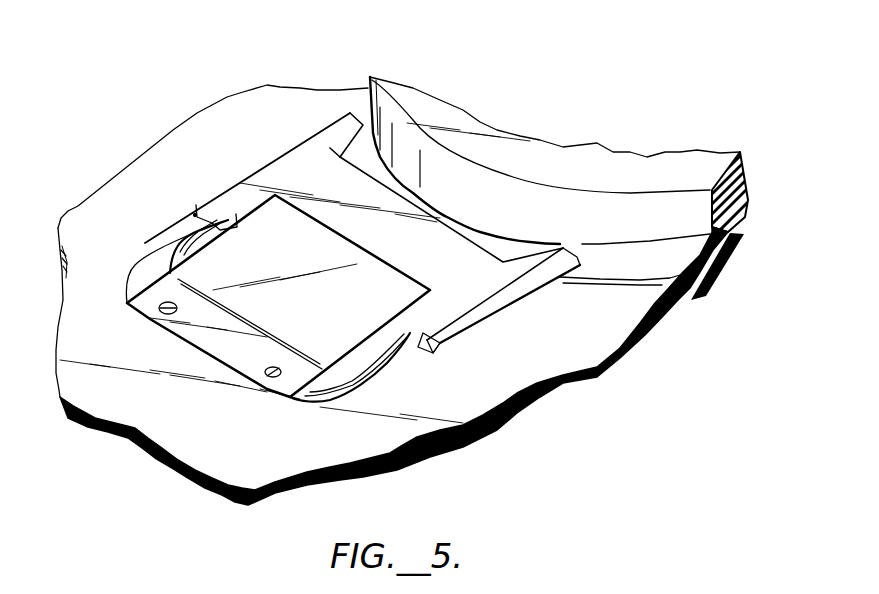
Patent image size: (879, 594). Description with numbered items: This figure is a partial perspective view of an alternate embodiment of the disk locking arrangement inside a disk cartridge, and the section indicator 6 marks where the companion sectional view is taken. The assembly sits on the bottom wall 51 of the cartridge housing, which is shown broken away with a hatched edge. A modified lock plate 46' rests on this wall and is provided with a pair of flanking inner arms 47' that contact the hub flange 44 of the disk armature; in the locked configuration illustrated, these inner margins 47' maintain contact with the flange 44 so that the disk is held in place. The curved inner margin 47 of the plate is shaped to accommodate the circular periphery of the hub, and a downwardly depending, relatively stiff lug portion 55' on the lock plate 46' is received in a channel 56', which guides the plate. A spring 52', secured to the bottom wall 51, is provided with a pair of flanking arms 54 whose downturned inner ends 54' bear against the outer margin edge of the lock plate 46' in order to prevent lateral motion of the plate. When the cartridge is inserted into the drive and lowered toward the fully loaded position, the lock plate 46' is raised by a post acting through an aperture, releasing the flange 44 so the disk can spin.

The peripheral circular flange 44 is at (672, 256).
The modified lock plate 46' is at (340, 141).
The circular segmental inner margin 47 is at (540, 142).
The flanking inner arms 47' is at (545, 181).
The bottom wall 51 is at (497, 418).
The spring 52' is at (302, 407).
The flanking arms 54 is at (269, 303).
The downturned inner ends 54' is at (324, 275).
The lug portion 55' is at (362, 242).
The channel 56' is at (438, 368).
The section line 6- 6 is at (567, 137).